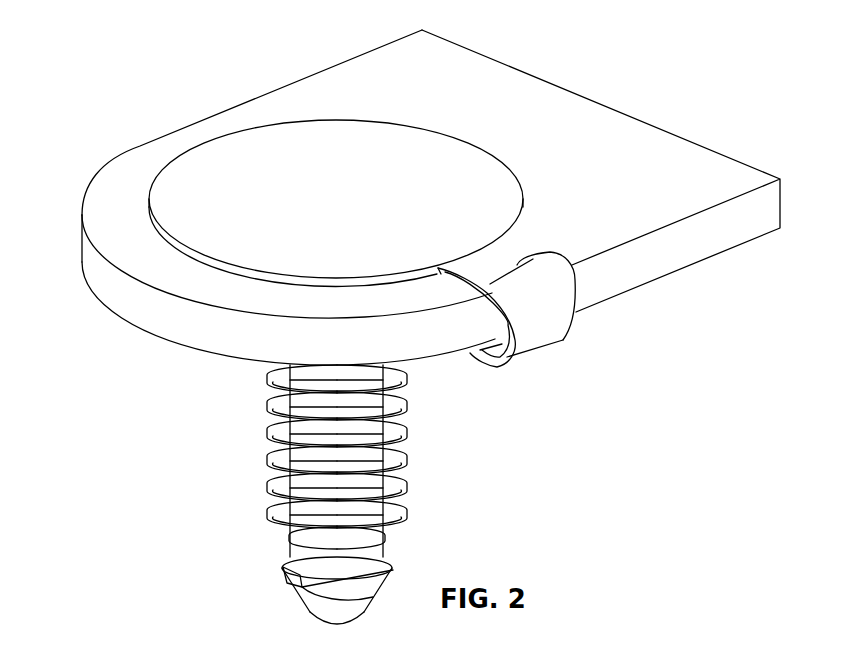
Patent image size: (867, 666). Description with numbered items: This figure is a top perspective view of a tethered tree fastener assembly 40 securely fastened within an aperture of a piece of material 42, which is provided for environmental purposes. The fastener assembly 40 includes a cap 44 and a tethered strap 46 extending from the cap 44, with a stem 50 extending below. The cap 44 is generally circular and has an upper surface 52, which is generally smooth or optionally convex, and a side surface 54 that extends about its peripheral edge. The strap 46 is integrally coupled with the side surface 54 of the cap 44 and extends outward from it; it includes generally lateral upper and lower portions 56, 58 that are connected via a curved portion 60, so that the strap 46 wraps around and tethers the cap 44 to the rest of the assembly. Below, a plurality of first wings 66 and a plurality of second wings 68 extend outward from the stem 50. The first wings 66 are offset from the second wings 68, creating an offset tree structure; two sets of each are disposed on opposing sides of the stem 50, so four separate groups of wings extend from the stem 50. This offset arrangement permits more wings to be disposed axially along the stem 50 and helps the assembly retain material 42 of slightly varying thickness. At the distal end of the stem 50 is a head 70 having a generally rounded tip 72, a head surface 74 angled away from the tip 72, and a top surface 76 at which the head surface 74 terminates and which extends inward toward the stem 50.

The fastener assembly 40 is at (188, 34).
The material 42 is at (82, 211).
The cap 44 is at (187, 170).
The tethered strap 46 is at (566, 340).
The stem 50 is at (400, 467).
The upper surface 52 is at (365, 143).
The side surface 54 is at (208, 258).
The upper portion 56 is at (530, 261).
The lower portion 58 is at (468, 353).
The curved portion 60 is at (550, 307).
The first wings 66 is at (270, 516).
The second wings 68 is at (405, 545).
The head 70 is at (303, 603).
The tip 72 is at (340, 630).
The head surface 74 is at (353, 607).
The top surface 76 is at (283, 577).